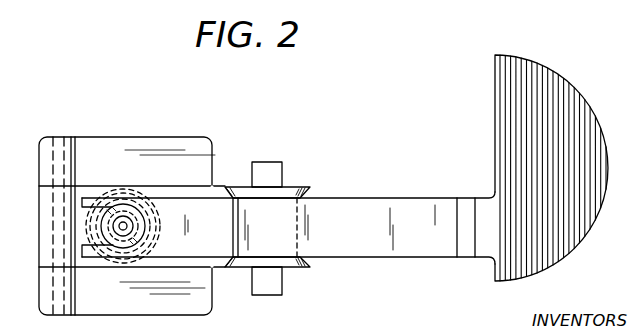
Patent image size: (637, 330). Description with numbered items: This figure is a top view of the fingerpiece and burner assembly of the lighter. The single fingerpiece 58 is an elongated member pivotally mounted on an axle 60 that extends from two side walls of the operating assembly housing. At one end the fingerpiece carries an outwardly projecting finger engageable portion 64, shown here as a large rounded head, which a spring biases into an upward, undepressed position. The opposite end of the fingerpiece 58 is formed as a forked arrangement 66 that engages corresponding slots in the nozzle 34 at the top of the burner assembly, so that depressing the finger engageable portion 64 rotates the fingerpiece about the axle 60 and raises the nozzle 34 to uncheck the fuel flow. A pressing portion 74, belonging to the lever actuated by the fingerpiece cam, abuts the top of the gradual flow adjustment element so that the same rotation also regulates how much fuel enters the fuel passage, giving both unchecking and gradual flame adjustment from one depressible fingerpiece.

The nozzle 34 is at (144, 219).
The fingerpiece 58 is at (396, 197).
The axle 60 is at (280, 163).
The finger engageable portion 64 is at (556, 69).
The forked arrangement 66 is at (91, 199).
The pressing portion 74 is at (470, 197).